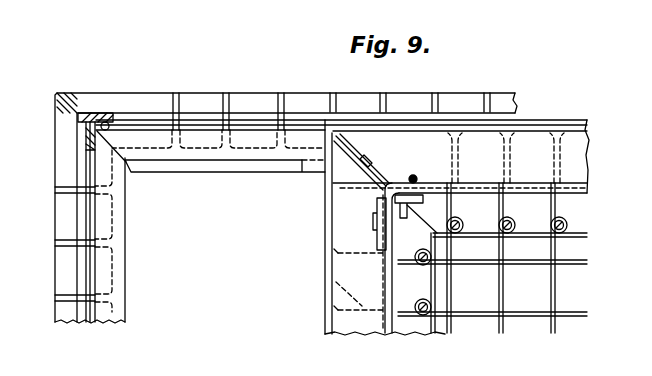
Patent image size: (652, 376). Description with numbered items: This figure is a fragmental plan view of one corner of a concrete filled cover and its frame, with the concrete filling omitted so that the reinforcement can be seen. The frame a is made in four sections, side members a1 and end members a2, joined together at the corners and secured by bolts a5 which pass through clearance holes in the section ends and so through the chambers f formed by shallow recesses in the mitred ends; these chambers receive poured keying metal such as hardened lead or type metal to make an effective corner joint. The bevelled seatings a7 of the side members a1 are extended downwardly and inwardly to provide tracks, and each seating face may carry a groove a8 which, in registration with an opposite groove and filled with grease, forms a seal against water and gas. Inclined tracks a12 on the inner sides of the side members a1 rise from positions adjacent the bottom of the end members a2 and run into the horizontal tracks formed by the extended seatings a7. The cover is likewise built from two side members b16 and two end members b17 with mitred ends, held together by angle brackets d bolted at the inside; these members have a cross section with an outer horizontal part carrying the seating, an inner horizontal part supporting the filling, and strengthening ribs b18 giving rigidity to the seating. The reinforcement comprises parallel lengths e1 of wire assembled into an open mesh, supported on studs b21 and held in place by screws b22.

The frame a is at (318, 92).
The side member of the frame a1 is at (263, 103).
The end member of the frame a2 is at (67, 313).
The bolt a5 is at (106, 111).
The seating a7 is at (198, 122).
The groove a8 is at (153, 128).
The inclined track a12 is at (243, 163).
The chamber f is at (75, 94).
The side member of the cover b16 is at (550, 130).
The end member of the cover b17 is at (350, 228).
The strengthening rib b18 is at (335, 295).
The stud b21 is at (566, 229).
The screw b22 is at (423, 316).
The angle bracket d is at (406, 177).
The length of wire e1 is at (547, 328).